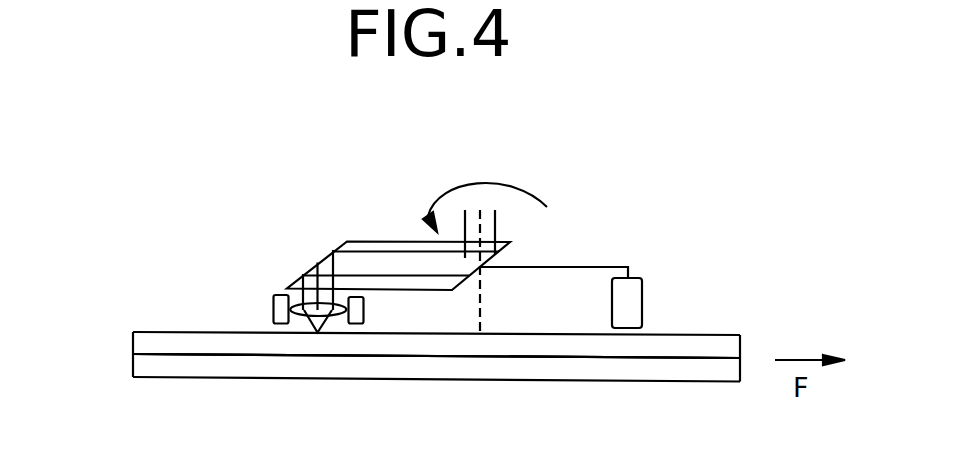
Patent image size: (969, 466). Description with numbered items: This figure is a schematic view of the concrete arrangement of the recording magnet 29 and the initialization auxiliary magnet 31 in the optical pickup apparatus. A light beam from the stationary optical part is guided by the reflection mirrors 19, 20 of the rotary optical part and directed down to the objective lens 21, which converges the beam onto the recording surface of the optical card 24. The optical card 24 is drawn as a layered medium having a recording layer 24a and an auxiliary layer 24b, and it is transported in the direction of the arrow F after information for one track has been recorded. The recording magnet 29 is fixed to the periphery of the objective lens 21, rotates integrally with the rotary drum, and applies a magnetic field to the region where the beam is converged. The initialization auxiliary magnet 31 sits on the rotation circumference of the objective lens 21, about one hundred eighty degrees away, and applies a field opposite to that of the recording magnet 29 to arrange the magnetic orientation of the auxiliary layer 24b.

The reflection mirror 19 is at (509, 243).
The reflection mirror 20 is at (346, 241).
The objective lens 21 is at (318, 262).
The optical card 24 is at (105, 270).
The recording layer 24a is at (157, 335).
The auxiliary layer 24b is at (157, 367).
The recording magnet 29 is at (283, 295).
The initialization auxiliary magnet 31 is at (642, 299).